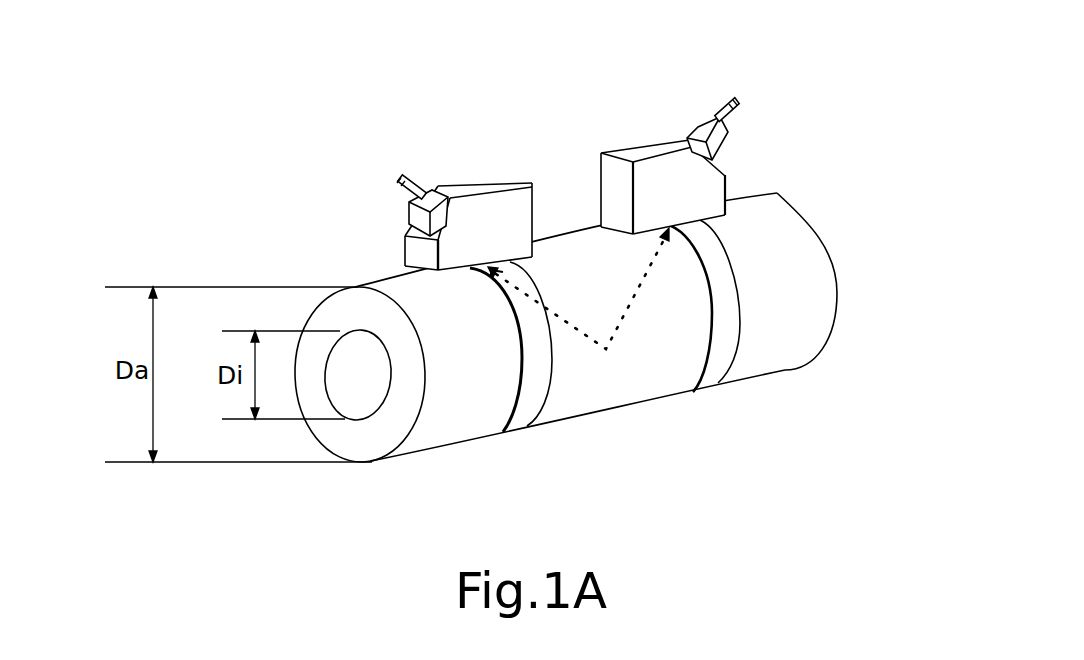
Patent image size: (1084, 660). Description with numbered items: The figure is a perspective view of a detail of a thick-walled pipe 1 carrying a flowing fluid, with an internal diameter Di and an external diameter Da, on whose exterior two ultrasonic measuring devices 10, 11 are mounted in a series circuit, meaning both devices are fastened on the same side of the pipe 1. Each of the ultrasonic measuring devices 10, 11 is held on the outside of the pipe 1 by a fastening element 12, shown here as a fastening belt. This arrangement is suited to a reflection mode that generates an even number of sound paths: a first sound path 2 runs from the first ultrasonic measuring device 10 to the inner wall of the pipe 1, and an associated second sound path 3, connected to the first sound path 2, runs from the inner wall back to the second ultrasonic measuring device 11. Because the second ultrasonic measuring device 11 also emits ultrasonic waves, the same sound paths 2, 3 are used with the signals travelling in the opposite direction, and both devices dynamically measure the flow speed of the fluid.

The thick-walled pipe 1 is at (795, 230).
The first sound path 2 is at (627, 312).
The second sound path 3 is at (568, 327).
The first ultrasonic measuring device 10 is at (668, 176).
The second ultrasonic measuring device 11 is at (497, 210).
The fastening element 12 is at (523, 412).